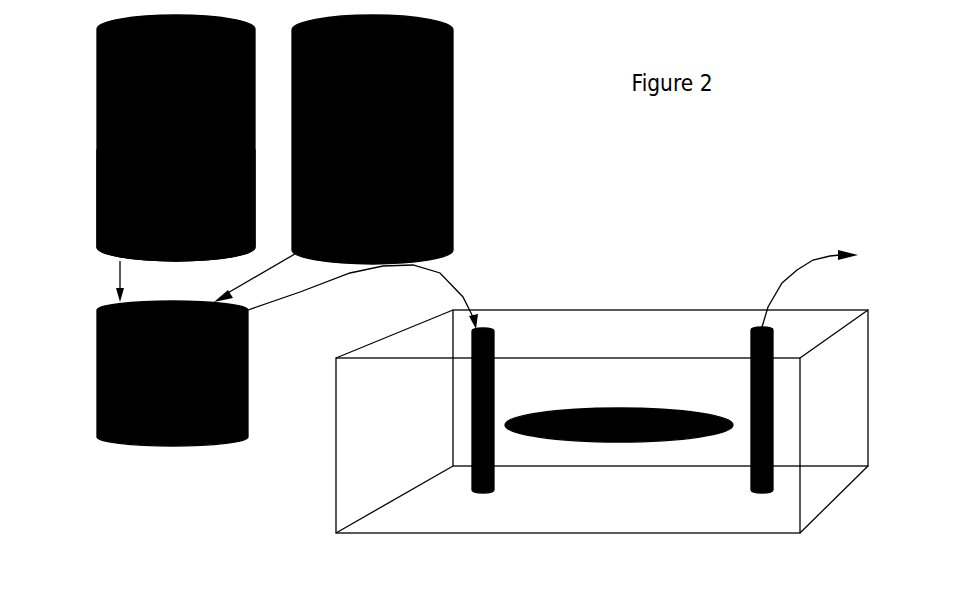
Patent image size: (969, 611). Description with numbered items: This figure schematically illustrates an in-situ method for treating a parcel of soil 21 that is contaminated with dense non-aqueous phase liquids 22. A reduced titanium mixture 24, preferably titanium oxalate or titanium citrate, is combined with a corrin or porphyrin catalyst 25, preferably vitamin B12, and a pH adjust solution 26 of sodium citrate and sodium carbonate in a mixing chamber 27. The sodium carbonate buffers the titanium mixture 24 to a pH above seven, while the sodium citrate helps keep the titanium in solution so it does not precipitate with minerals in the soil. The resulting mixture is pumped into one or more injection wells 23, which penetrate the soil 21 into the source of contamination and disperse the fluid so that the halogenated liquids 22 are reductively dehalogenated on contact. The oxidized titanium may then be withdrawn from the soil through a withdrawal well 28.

The parcel of soil 21 is at (529, 502).
The dense non-aqueous phase liquids 22 is at (672, 442).
The injection well 23 is at (492, 328).
The reduced titanium mixture 24 is at (392, 139).
The corrin or porphyrin catalyst 25 is at (80, 73).
The pH adjust solution 26 is at (80, 167).
The mixing chamber 27 is at (172, 388).
The withdrawal well 28 is at (755, 327).